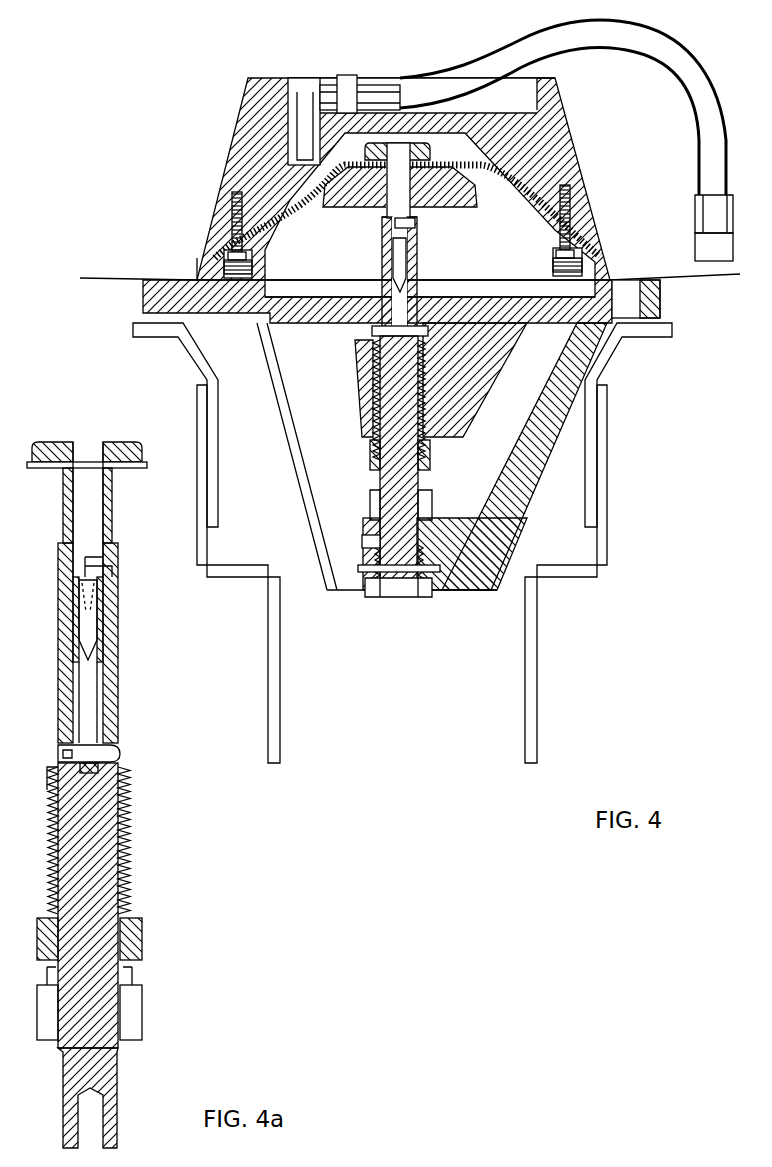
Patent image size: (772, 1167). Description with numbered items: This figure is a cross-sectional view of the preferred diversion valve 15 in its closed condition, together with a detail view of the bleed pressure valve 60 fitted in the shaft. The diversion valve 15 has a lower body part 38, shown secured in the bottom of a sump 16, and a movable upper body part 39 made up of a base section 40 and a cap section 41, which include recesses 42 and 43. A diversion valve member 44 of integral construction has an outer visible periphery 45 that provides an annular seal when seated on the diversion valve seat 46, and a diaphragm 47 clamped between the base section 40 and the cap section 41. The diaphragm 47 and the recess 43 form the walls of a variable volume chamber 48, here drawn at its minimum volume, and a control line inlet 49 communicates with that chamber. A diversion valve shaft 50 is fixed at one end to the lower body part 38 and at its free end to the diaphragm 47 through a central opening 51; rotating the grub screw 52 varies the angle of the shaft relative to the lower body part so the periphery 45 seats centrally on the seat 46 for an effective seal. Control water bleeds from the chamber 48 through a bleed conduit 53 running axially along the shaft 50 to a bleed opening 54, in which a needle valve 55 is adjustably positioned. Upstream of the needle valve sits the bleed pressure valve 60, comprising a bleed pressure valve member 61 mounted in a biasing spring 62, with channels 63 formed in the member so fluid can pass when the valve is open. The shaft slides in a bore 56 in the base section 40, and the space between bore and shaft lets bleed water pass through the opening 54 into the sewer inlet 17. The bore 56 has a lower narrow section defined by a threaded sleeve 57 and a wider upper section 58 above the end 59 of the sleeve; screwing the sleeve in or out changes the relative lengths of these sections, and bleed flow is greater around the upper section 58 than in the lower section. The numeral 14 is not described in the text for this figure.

In FIG. 4, the cable conduit 14 is at (620, 24).
In FIG. 4, the diversion valve 15 is at (376, 179).
In FIG. 4, the sump 16 is at (85, 278).
In FIG. 4, the sewer inlet 17 is at (412, 768).
In FIG. 4, the lower body part 38 is at (540, 443).
In FIG. 4, the upper body part 39 is at (600, 167).
In FIG. 4, the base section 40 is at (266, 325).
In FIG. 4, the cap section 41 is at (570, 114).
In FIG. 4, the recess 42 is at (456, 297).
In FIG. 4, the recess 43 is at (388, 132).
In FIG. 4, the diversion valve member 44 is at (197, 258).
In FIG. 4, the outer visible periphery 45 is at (601, 254).
In FIG. 4, the diversion valve seat 46 is at (622, 294).
In FIG. 4, the diaphragm 47 is at (310, 230).
In FIG. 4, the variable volume chamber 48 is at (297, 203).
In FIG. 4, the control line inlet 49 is at (300, 88).
In FIG. 4, the diversion valve shaft 50 is at (390, 480).
In FIG. 4A, the diversion valve shaft 50 is at (108, 890).
In FIG. 4, the central opening 51 is at (430, 207).
In FIG. 4, the grub screw 52 is at (360, 548).
In FIG. 4, the bleed conduit 53 is at (383, 215).
In FIG. 4A, the bleed conduit 53 is at (88, 525).
In FIG. 4, the bleed opening 54 is at (426, 330).
In FIG. 4A, the bleed opening 54 is at (100, 753).
In FIG. 4, the needle valve 55 is at (374, 333).
In FIG. 4A, the needle valve 55 is at (88, 750).
In FIG. 4, the bore 56 is at (426, 425).
In FIG. 4A, the bore 56 is at (130, 833).
In FIG. 4, the sleeve 57 is at (426, 400).
In FIG. 4A, the sleeve 57 is at (128, 810).
In FIG. 4, the upper section 58 is at (421, 297).
In FIG. 4, the end 59 is at (362, 347).
In FIG. 4A, the end 59 is at (128, 770).
In FIG. 4A, the bleed pressure valve 60 is at (133, 646).
In FIG. 4A, the bleed pressure valve member 61 is at (88, 627).
In FIG. 4A, the biasing spring 62 is at (100, 662).
In FIG. 4A, the channels 63 is at (103, 587).